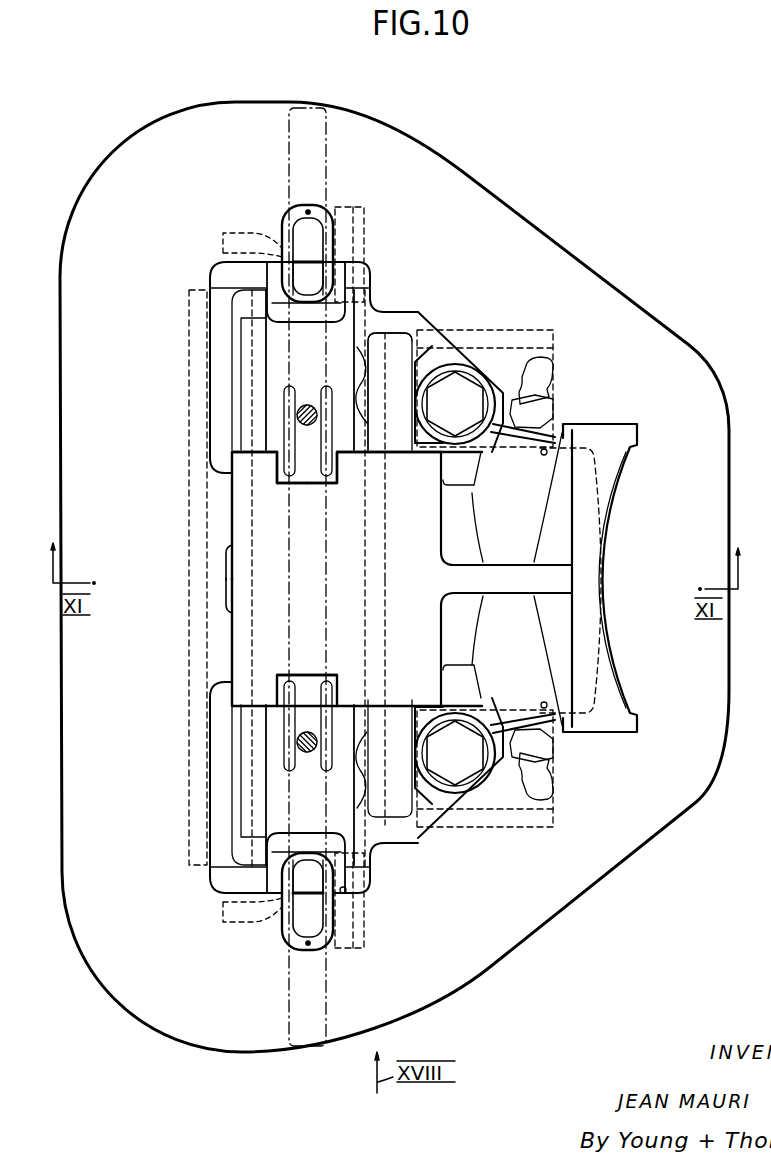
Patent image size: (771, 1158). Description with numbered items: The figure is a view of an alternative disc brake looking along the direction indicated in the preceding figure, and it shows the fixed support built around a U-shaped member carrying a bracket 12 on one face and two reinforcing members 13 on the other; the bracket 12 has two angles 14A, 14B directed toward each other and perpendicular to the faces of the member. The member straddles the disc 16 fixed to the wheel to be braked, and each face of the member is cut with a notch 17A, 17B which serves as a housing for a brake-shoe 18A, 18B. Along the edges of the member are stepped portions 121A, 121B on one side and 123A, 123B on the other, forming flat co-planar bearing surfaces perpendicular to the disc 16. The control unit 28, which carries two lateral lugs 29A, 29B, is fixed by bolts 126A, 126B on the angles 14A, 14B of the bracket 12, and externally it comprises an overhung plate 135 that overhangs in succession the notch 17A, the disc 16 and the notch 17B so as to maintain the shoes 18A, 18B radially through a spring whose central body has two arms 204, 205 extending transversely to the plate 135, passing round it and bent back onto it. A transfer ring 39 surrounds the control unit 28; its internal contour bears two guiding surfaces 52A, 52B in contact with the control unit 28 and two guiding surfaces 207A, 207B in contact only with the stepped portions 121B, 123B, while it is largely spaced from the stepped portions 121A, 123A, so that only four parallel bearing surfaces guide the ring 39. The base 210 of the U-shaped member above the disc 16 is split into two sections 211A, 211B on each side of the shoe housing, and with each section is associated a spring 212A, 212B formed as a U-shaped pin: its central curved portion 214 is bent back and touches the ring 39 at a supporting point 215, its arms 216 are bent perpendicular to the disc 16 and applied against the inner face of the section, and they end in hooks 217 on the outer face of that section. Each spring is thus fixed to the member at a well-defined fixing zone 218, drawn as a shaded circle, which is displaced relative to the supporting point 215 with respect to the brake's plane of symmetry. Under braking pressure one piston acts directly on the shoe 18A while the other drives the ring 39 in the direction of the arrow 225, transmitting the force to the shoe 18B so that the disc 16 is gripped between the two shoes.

The bracket 12 is at (412, 320).
The reinforcing members 13 is at (252, 326).
The angle 14A is at (435, 800).
The angle 14B is at (427, 360).
The disc 16 is at (286, 1011).
The notch 17A is at (362, 460).
The notch 17B is at (236, 457).
The brake-shoe 18A is at (337, 484).
The brake-shoe 18B is at (278, 483).
The control unit 28 is at (613, 422).
The lug 29A is at (507, 762).
The lug 29B is at (497, 394).
The transfer ring 39 is at (598, 266).
The guiding surface 52A is at (541, 712).
The guiding surface 52B is at (549, 449).
The stepped portion 121A is at (276, 898).
The stepped portion 121B is at (348, 890).
The stepped portion 123A is at (284, 253).
The stepped portion 123B is at (338, 263).
The bolt 126A is at (477, 763).
The bolt 126B is at (477, 414).
The overhung plate 135 is at (328, 590).
The arm 204 is at (305, 674).
The arm 205 is at (307, 487).
The guiding surface 207A is at (342, 890).
The guiding surface 207B is at (345, 255).
The base 210 is at (268, 778).
The section 211A is at (305, 796).
The section 211B is at (300, 349).
The spring 212A is at (283, 915).
The spring 212B is at (284, 237).
The central curved portion 214 is at (287, 208).
The supporting point 215 is at (307, 210).
The arms 216 is at (322, 240).
The hooks 217 is at (288, 409).
The fixing zone 218 is at (299, 417).
The arrow 225 is at (168, 85).